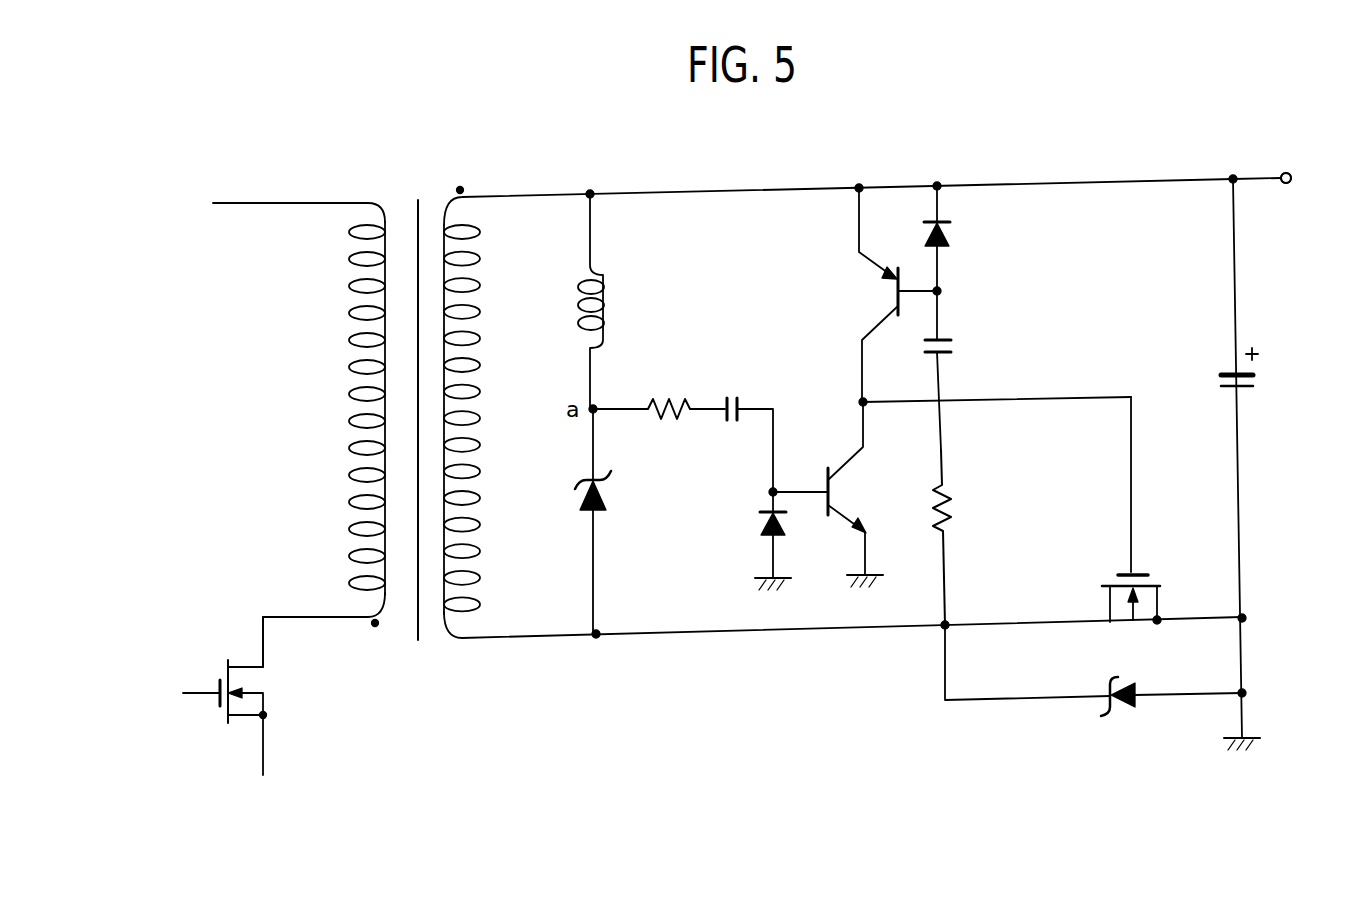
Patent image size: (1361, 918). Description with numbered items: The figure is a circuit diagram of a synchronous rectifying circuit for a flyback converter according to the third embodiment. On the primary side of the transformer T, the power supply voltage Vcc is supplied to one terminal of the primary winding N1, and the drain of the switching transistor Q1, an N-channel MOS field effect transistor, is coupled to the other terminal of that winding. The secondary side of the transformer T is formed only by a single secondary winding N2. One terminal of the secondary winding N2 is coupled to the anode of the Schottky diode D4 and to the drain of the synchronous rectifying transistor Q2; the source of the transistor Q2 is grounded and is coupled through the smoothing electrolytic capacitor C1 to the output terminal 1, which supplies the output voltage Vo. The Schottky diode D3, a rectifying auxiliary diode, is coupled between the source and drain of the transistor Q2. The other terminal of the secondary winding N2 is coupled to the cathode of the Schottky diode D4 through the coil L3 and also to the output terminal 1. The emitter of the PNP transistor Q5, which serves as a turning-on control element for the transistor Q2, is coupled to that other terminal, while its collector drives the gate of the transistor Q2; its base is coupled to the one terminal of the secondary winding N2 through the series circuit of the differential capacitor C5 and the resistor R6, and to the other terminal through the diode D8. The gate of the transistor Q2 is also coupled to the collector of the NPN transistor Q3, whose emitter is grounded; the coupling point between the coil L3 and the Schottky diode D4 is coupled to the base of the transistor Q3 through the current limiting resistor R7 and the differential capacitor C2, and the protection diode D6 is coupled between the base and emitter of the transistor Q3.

The output terminal 1 is at (1282, 172).
The power supply voltage Vcc is at (275, 207).
The output voltage Vo is at (1303, 179).
The transformer T is at (414, 405).
The primary winding N1 is at (324, 444).
The secondary winding N2 is at (500, 401).
The switching transistor Q1 is at (240, 696).
The coil L3 is at (605, 301).
The current limiting resistor R7 is at (659, 392).
The differential capacitor C2 is at (746, 429).
The Schottky diode D4 is at (608, 522).
The protection diode D6 is at (762, 541).
The transistor Q3 is at (832, 494).
The transistor Q5 is at (892, 295).
The diode D8 is at (954, 238).
The differential capacitor C5 is at (956, 370).
The resistor R6 is at (961, 537).
The Schottky diode D3 is at (1093, 687).
The synchronous rectifying transistor Q2 is at (1136, 526).
The smoothing electrolytic capacitor C1 is at (1254, 371).